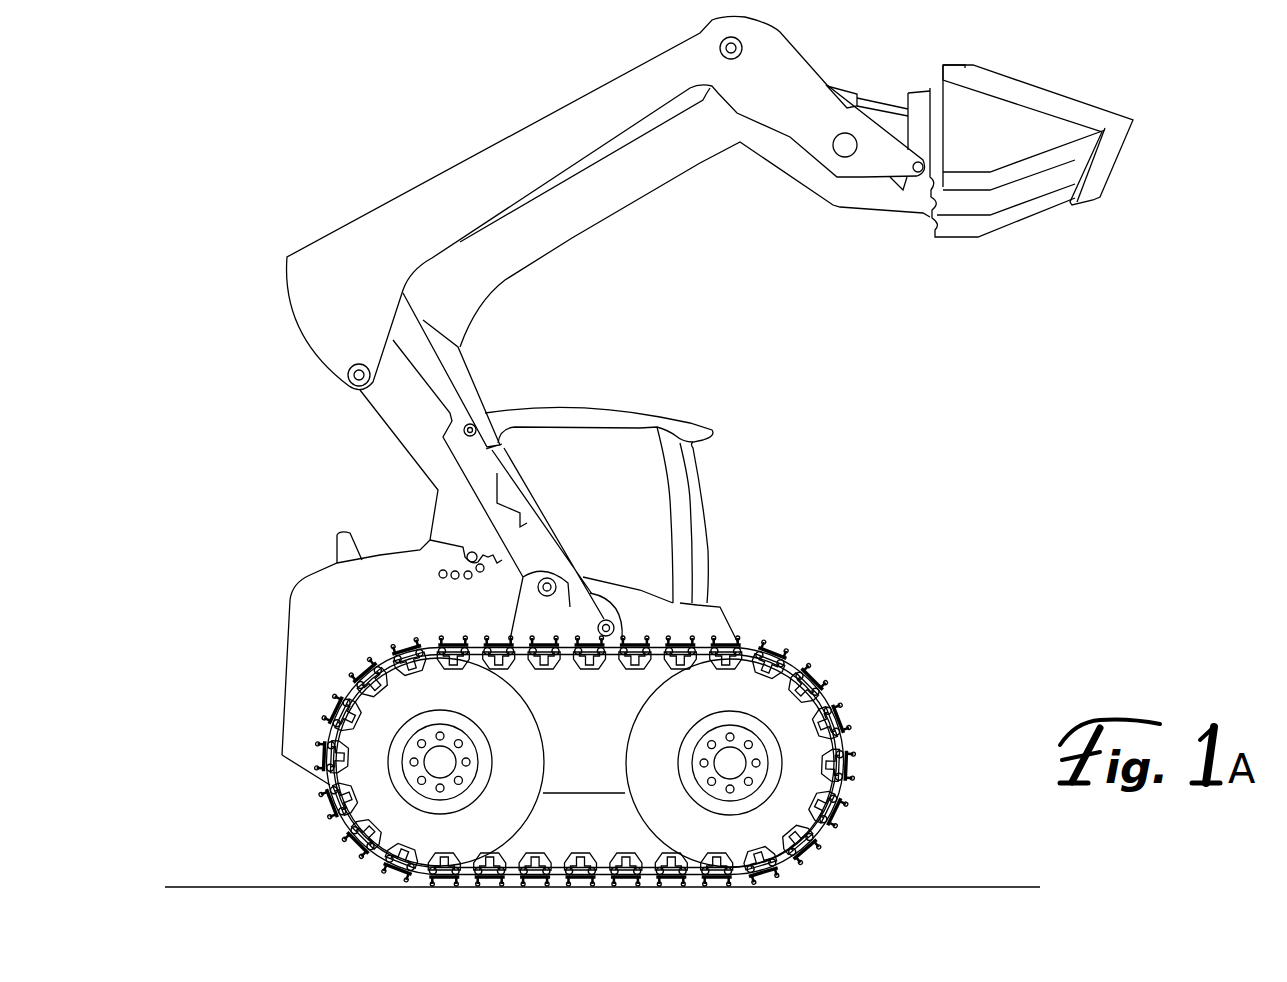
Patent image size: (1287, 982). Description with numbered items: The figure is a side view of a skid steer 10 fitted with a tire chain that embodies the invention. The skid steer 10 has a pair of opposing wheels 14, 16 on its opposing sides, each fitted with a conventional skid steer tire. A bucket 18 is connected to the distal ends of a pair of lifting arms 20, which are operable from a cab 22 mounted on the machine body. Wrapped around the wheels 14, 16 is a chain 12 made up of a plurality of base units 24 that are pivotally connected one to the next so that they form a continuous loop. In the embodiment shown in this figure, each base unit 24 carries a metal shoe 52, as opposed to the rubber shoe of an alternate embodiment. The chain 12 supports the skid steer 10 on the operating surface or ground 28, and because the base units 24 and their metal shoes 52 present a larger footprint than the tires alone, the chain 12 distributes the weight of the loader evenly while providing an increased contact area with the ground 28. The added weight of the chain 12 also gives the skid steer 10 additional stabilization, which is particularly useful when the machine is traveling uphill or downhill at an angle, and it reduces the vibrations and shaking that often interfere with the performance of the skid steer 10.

The skid steer 10 is at (286, 584).
The chain 12 is at (619, 713).
The wheel 14 is at (388, 806).
The wheel 16 is at (803, 768).
The bucket 18 is at (1027, 80).
The lifting arms 20 is at (490, 130).
The cab 22 is at (597, 440).
The base unit 24 is at (810, 668).
The ground 28 is at (287, 885).
The metal shoe 52 is at (763, 648).